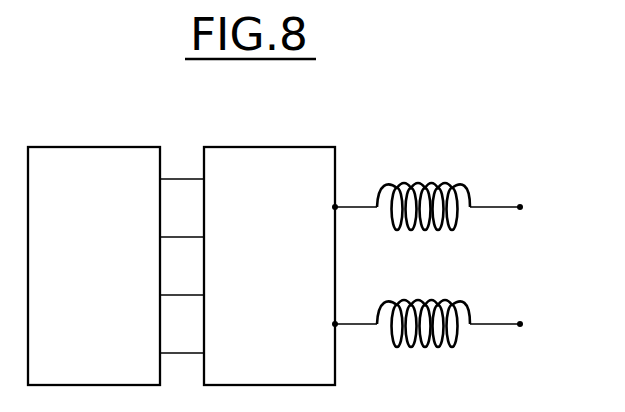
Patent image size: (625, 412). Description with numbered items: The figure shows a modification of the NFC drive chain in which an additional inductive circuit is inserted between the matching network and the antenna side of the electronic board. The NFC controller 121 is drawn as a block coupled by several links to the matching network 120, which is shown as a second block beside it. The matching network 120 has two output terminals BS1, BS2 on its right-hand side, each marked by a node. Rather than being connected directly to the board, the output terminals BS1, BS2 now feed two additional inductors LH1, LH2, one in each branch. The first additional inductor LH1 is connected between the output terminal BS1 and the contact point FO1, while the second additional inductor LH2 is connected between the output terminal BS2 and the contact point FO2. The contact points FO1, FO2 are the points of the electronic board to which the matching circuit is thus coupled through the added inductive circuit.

The NFC controller 121 is at (94, 266).
The matching network 120 is at (269, 266).
The output terminal BS1 is at (336, 206).
The output terminal BS2 is at (337, 327).
The additional inductor LH1 is at (430, 180).
The additional inductor LH2 is at (430, 299).
The contact point FO1 is at (520, 203).
The contact point FO2 is at (520, 330).